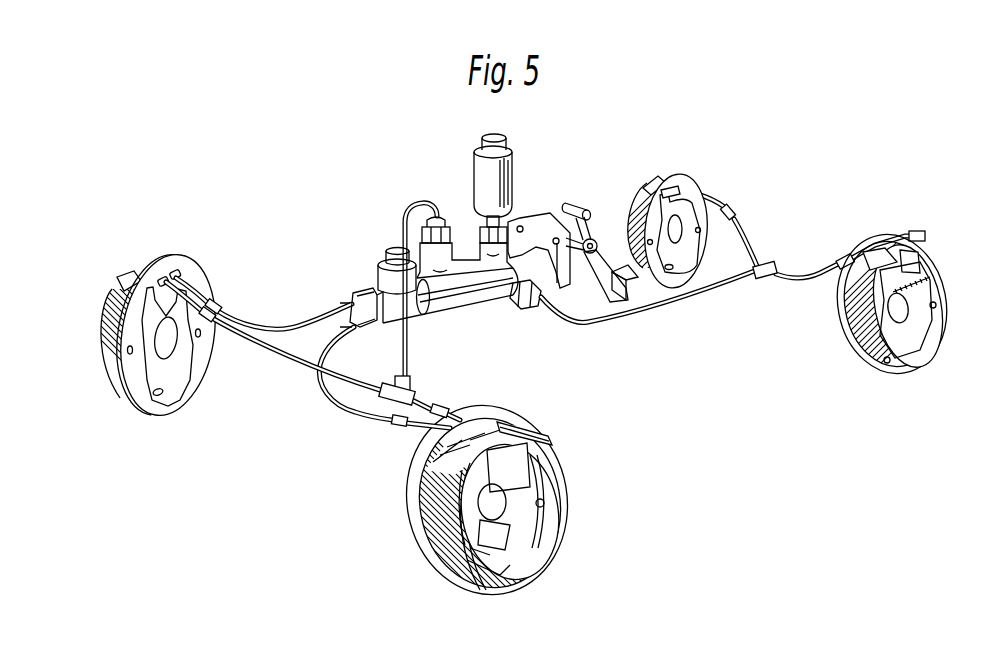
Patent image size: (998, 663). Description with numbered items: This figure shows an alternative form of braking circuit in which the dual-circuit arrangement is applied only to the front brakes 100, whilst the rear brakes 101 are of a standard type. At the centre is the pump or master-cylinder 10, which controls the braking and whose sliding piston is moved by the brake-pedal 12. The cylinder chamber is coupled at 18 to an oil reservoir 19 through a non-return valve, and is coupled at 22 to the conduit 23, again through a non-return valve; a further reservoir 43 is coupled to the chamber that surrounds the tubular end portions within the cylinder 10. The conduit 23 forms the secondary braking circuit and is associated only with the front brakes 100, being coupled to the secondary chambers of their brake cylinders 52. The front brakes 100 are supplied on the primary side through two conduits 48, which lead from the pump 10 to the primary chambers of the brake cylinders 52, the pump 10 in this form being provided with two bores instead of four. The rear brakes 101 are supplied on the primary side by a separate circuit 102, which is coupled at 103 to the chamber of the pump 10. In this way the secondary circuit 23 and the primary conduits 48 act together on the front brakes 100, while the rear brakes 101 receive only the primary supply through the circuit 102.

The master-cylinder 10 is at (455, 247).
The brake-pedal 12 is at (633, 296).
The coupling to reservoir 18 is at (507, 247).
The reservoir 19 is at (513, 160).
The coupling to conduit 22 is at (442, 227).
The conduit 23 is at (407, 204).
The reservoir 43 is at (377, 280).
The conduits 48 is at (285, 327).
The brake cylinders 52 is at (140, 280).
The front brakes 100 is at (315, 413).
The rear brakes 101 is at (628, 210).
The circuit 102 is at (738, 228).
The coupling point 103 is at (543, 299).